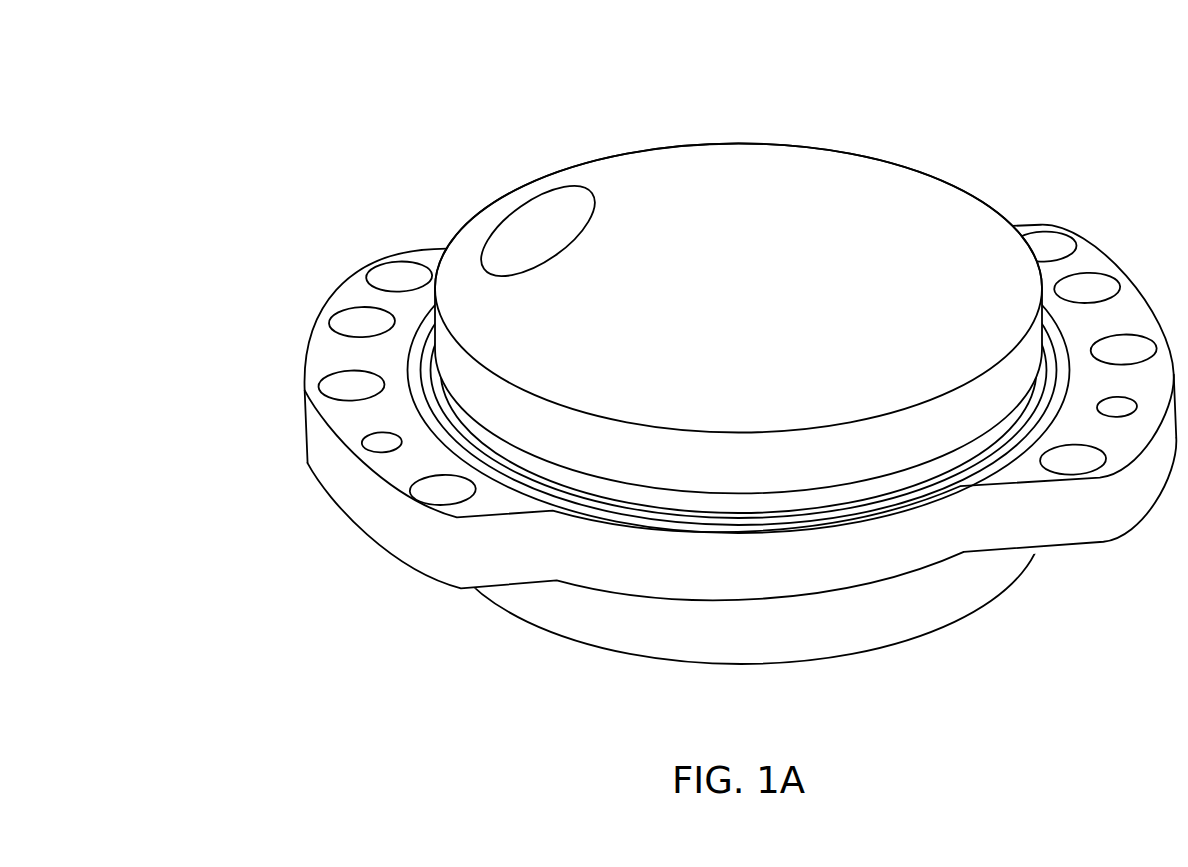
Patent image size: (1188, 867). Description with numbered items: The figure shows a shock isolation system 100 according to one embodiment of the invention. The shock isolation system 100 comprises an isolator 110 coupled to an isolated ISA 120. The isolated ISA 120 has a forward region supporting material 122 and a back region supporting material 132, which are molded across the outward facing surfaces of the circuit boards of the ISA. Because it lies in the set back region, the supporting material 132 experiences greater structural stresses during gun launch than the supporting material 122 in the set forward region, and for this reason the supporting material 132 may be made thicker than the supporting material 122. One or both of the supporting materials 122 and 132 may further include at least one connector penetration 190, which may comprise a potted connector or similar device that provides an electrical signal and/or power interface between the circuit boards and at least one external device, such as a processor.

The shock isolation system 100 is at (673, 388).
The isolator 110 is at (673, 414).
The isolated ISA 120 is at (738, 262).
The forward region supporting material 122 is at (906, 175).
The back region supporting material 132 is at (960, 605).
The connector penetration 190 is at (530, 217).